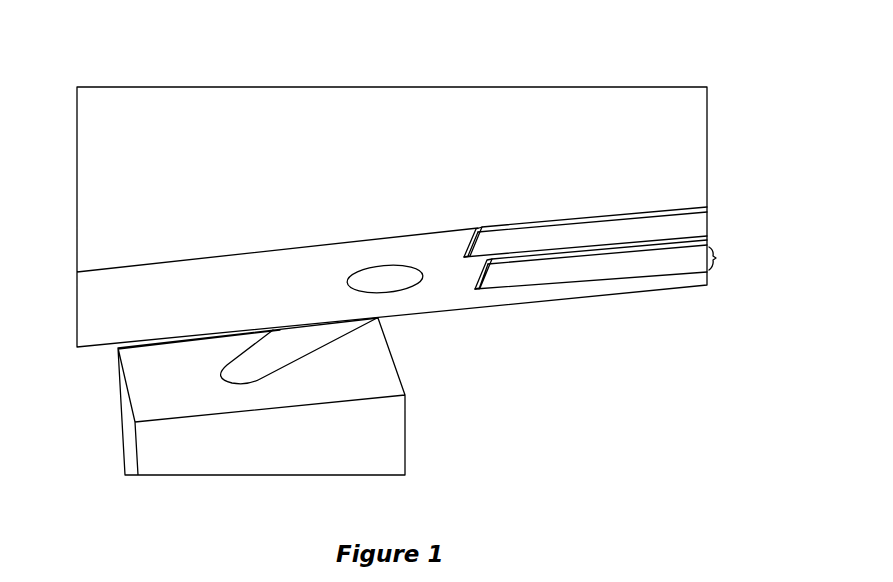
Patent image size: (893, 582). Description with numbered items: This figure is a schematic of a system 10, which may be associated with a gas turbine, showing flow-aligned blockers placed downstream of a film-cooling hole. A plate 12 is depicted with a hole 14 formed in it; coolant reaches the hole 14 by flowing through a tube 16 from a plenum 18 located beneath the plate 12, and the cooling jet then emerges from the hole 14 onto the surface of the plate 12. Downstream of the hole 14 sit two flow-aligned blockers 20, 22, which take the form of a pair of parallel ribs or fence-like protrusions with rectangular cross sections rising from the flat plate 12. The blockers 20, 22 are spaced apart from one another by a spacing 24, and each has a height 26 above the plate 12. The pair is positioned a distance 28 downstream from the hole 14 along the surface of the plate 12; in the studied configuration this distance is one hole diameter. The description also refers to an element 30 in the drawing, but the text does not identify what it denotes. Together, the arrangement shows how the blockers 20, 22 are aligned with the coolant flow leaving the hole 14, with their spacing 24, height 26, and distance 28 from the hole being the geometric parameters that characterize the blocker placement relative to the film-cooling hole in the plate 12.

The system 10 is at (578, 56).
The plate 12 is at (93, 308).
The hole 14 is at (387, 285).
The tube 16 is at (332, 320).
The plenum 18 is at (388, 442).
The flow-aligned blocker 20 is at (698, 222).
The flow-aligned blocker 22 is at (677, 262).
The spacing 24 is at (462, 264).
The height 26 is at (717, 255).
The distance 28 is at (410, 262).
The rail surface 30 is at (572, 250).